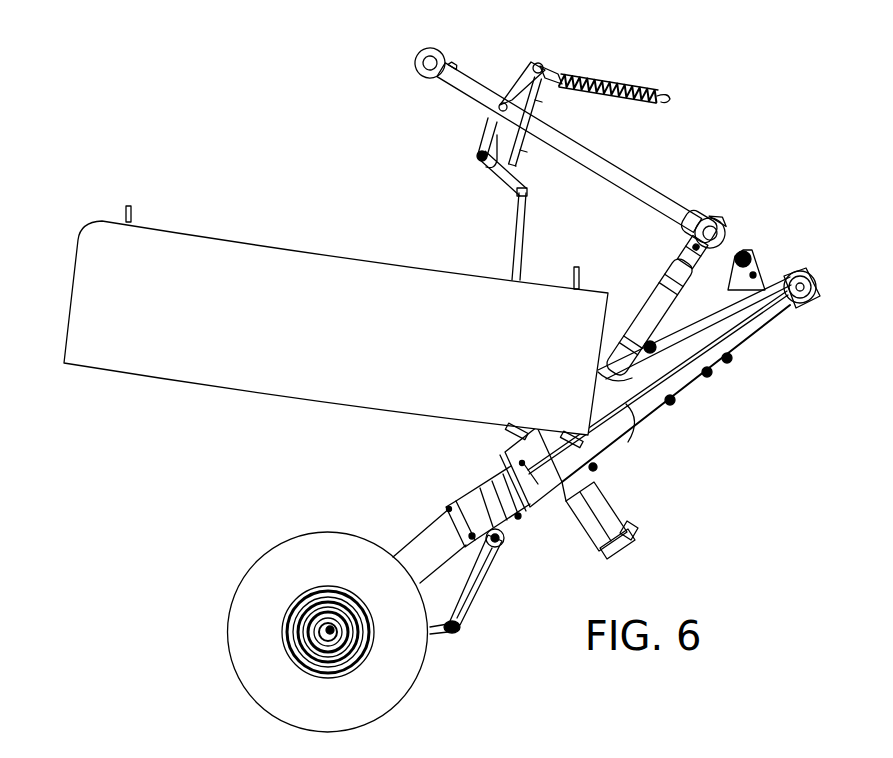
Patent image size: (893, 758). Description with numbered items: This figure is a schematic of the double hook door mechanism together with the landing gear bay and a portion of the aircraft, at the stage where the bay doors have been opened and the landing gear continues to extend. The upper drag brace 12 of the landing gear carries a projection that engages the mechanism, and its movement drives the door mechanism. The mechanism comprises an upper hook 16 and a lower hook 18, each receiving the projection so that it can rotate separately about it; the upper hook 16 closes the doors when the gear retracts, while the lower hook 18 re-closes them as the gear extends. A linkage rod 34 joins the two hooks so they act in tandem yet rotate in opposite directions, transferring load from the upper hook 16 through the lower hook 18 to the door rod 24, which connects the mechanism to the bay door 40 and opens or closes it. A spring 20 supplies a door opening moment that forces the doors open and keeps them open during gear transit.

The upper drag brace 12 is at (613, 159).
The upper hook 16 is at (541, 66).
The lower hook 18 is at (478, 165).
The spring 20 is at (608, 87).
The door rod 24 is at (518, 235).
The linkage rod 34 is at (522, 148).
The closed door 40 is at (198, 345).